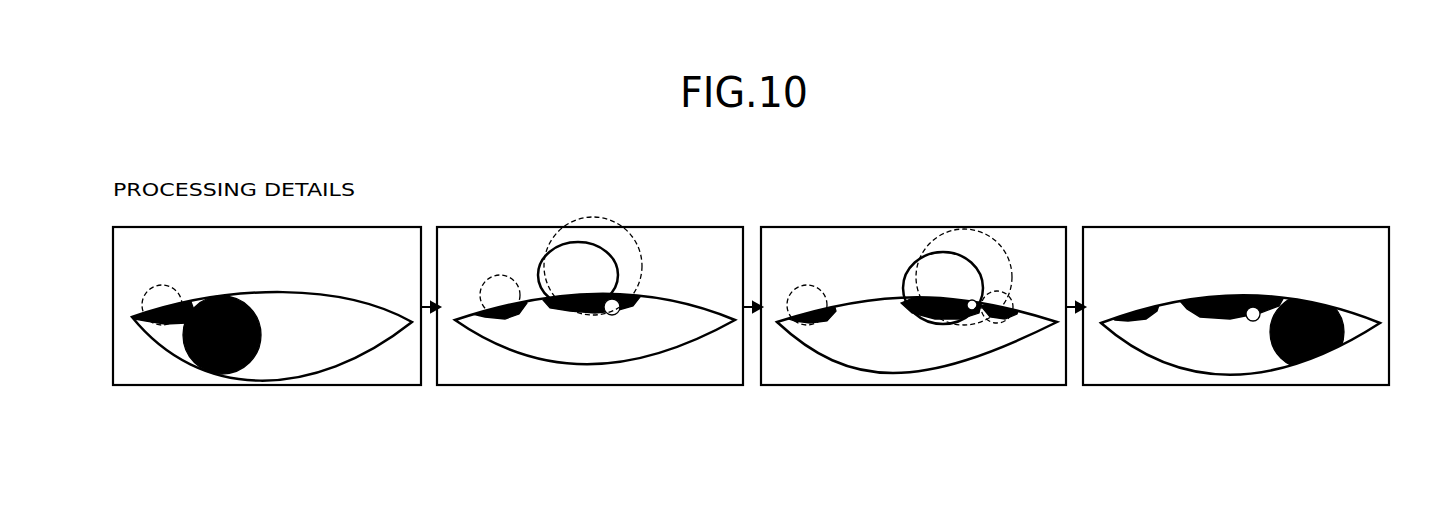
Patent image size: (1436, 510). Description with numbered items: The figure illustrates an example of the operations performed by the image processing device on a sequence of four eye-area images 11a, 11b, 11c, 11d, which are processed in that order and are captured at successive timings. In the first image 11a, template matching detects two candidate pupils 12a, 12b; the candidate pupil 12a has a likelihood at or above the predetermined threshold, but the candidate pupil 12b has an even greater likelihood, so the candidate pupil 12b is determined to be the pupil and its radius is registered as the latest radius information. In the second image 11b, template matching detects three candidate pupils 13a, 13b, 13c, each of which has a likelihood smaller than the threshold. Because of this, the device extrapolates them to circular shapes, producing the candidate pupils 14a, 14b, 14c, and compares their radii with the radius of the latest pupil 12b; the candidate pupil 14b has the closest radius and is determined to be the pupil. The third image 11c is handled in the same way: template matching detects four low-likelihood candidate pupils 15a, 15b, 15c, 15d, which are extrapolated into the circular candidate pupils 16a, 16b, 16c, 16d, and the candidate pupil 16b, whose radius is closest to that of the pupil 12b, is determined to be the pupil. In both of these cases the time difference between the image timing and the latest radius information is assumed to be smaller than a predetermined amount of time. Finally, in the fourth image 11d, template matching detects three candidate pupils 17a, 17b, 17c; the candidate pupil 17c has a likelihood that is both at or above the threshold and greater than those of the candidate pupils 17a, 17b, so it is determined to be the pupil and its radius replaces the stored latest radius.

The image 11a is at (351, 212).
The image 11b is at (675, 212).
The image 11c is at (857, 212).
The image 11d is at (1157, 212).
The candidate pupil 12a is at (190, 300).
The candidate pupil 12b is at (260, 325).
The candidate pupil 13a is at (498, 315).
The candidate pupil 13b is at (562, 302).
The candidate pupil 13c is at (628, 304).
The candidate pupil 14a is at (505, 275).
The candidate pupil 14b is at (617, 275).
The candidate pupil 14c is at (595, 217).
The candidate pupil 15a is at (828, 318).
The candidate pupil 15b is at (913, 320).
The candidate pupil 15c is at (973, 317).
The candidate pupil 15d is at (1013, 322).
The candidate pupil 16a is at (810, 285).
The candidate pupil 16b is at (943, 252).
The candidate pupil 16c is at (1013, 297).
The candidate pupil 16d is at (1030, 300).
The candidate pupil 17a is at (1145, 318).
The candidate pupil 17b is at (1227, 318).
The candidate pupil 17c is at (1322, 302).